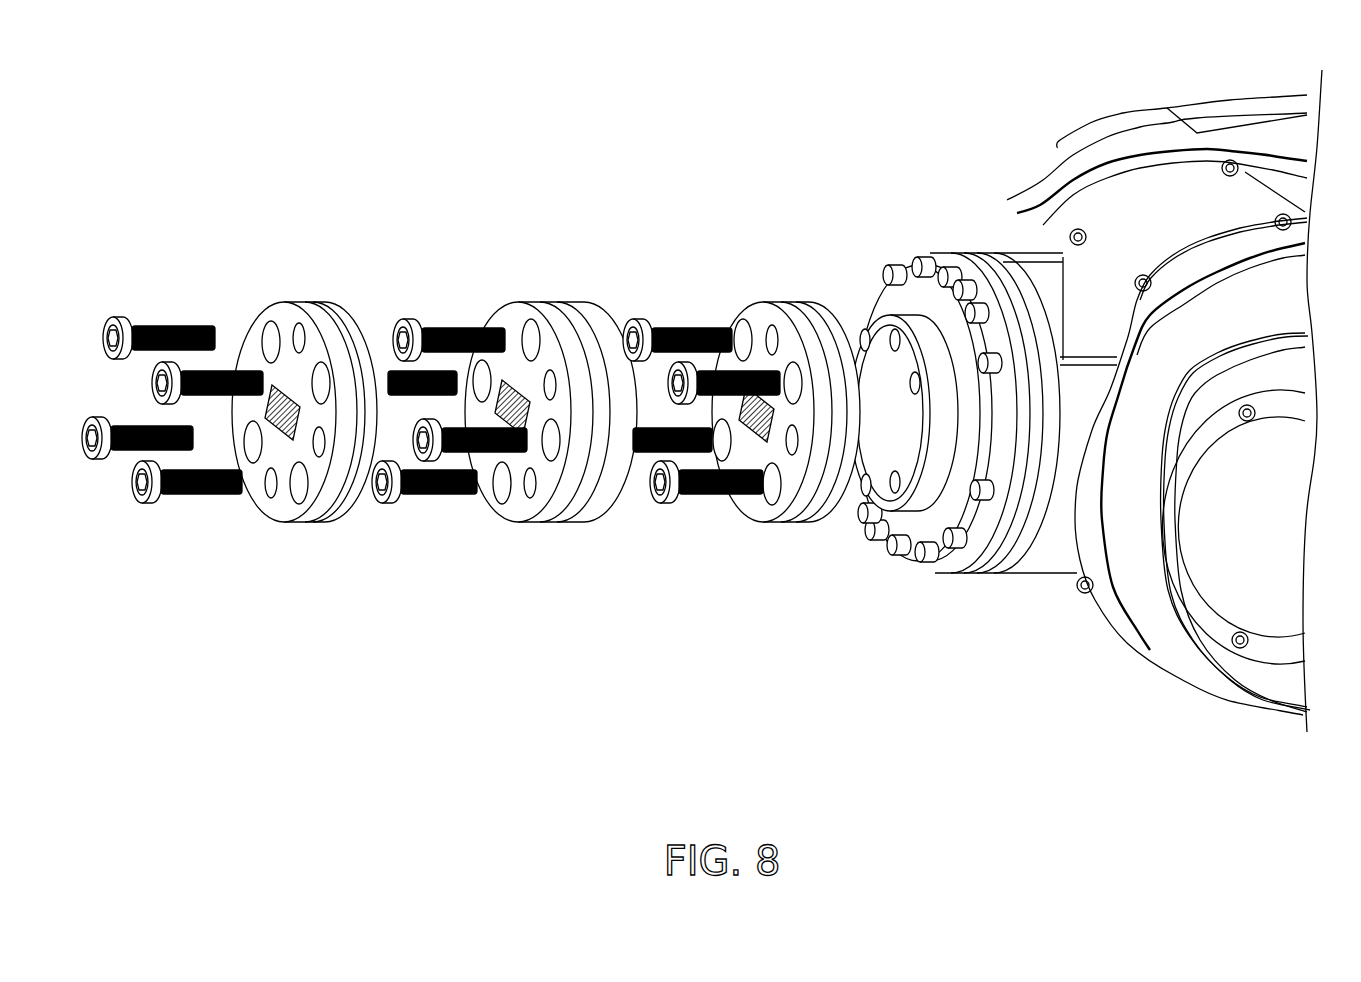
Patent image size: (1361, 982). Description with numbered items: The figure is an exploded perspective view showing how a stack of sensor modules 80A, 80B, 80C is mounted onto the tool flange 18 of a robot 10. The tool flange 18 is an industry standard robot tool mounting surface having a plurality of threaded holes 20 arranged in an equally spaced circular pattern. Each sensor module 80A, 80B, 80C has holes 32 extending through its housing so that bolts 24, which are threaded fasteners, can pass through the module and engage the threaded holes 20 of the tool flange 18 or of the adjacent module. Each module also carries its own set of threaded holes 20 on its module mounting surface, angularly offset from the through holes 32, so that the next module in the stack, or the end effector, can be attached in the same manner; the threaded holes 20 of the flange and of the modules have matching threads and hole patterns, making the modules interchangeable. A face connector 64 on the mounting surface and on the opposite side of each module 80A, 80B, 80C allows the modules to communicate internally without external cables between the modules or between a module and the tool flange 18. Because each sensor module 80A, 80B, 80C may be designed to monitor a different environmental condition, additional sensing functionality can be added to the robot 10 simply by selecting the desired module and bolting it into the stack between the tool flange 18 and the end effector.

The robot 10 is at (1142, 108).
The tool flange 18 is at (880, 305).
The threaded holes 20 is at (298, 318).
The bolts 24 is at (178, 326).
The holes 32 is at (265, 321).
The face connector 64 is at (270, 402).
The sensor module 80A is at (813, 300).
The sensor module 80B is at (572, 300).
The sensor module 80C is at (333, 300).